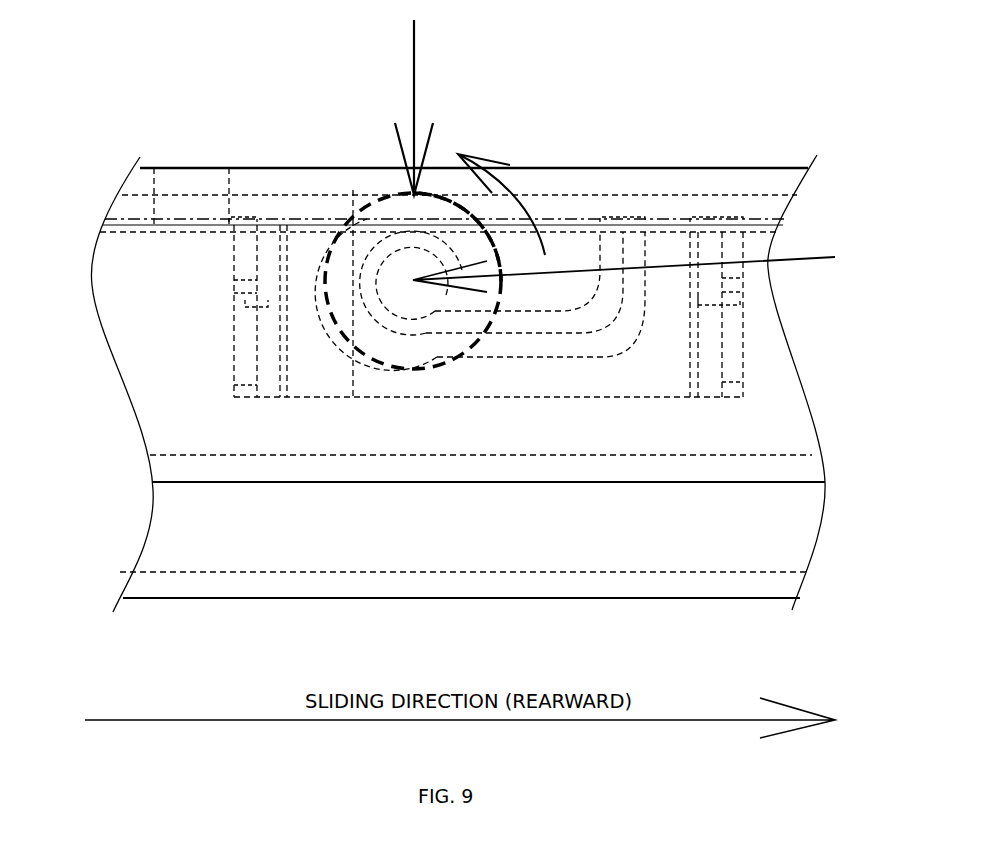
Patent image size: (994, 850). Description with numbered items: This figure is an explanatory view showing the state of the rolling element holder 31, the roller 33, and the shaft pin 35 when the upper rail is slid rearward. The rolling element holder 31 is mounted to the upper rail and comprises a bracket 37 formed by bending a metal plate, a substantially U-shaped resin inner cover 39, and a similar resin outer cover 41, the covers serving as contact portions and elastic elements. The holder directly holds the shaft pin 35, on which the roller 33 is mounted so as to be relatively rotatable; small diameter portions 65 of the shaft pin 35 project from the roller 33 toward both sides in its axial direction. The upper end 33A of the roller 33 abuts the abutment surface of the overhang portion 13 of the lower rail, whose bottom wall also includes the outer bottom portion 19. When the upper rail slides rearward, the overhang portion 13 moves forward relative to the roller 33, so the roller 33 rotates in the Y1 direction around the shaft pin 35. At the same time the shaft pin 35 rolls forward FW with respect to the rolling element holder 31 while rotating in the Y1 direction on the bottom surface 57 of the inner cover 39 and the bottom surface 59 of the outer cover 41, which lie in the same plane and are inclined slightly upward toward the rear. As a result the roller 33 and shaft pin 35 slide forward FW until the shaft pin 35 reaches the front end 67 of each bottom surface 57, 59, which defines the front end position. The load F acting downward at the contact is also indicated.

The overhang portion 13 is at (680, 178).
The outer bottom portion 19 is at (700, 580).
The rolling element holder 31 is at (740, 340).
The roller 33 is at (403, 262).
The upper end 33A is at (410, 225).
The shaft pin 35 is at (377, 345).
The bracket 37 is at (323, 375).
The inner cover 39 is at (528, 322).
The outer cover 41 is at (528, 322).
The bottom surface 57 is at (565, 300).
The bottom surface 59 is at (565, 300).
The small diameter portion 65 is at (373, 253).
The front end 67 is at (323, 293).
The load F is at (414, 58).
The forward direction FW is at (790, 258).
The rotation direction Y1 is at (513, 187).